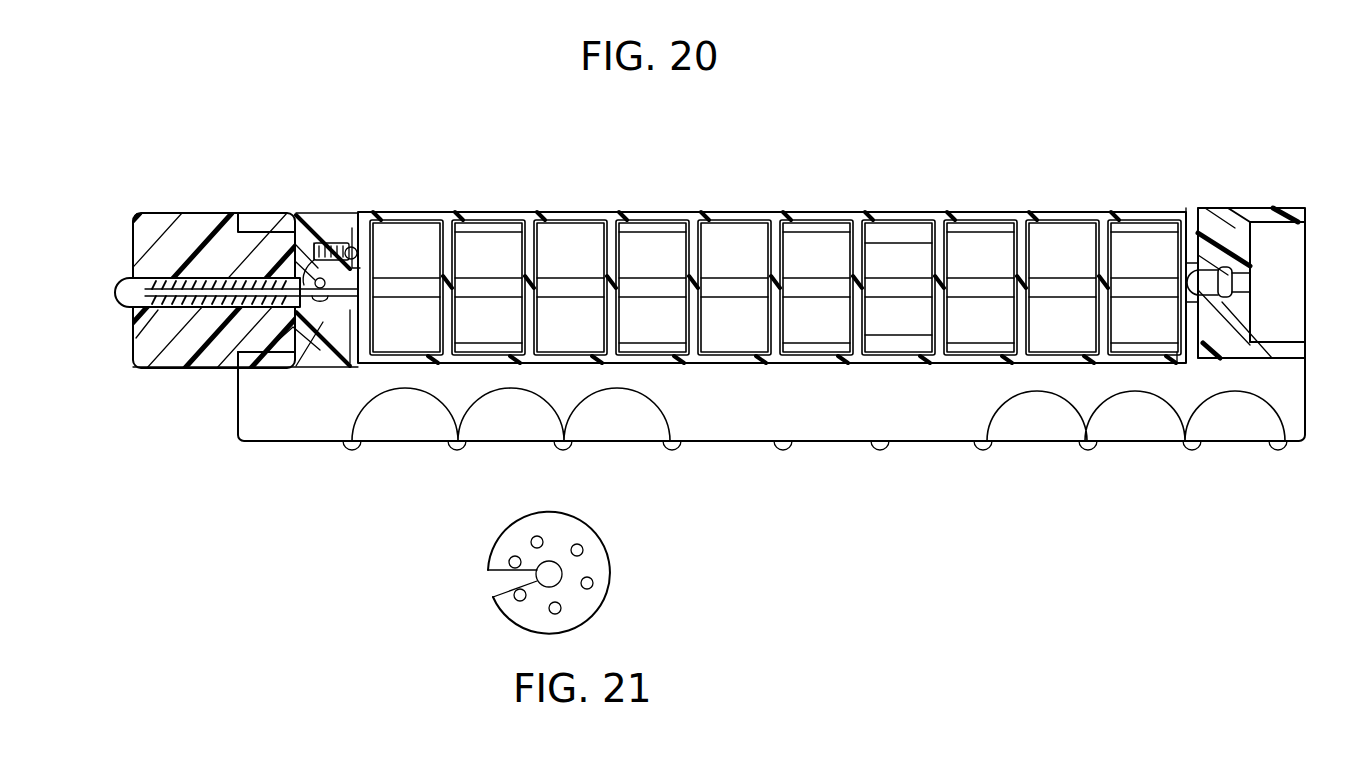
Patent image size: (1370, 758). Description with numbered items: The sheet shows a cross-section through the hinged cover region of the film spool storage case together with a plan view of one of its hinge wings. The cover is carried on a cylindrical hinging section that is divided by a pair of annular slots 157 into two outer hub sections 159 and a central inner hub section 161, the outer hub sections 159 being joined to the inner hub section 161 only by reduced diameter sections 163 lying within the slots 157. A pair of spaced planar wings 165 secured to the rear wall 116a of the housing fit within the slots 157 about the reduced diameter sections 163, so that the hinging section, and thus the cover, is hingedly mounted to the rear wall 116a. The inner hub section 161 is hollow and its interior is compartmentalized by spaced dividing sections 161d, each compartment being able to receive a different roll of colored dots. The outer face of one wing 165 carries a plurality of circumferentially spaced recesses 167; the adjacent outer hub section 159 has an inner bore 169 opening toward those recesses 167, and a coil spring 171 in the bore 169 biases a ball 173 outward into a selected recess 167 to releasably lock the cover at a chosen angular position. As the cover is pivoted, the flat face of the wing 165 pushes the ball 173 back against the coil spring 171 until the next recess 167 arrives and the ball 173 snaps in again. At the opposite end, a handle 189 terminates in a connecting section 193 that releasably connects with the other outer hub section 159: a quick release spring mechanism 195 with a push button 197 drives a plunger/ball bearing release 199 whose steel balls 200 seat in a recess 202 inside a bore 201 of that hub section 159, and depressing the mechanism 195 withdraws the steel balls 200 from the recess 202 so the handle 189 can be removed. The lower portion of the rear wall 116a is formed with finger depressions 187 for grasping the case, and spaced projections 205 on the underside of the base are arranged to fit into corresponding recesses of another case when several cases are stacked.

In FIG. 20, the rear wall 116a is at (848, 430).
In FIG. 20, the slots 157 is at (358, 218).
In FIG. 20, the outer hub sections 159 is at (241, 222).
In FIG. 20, the inner hub section 161 is at (775, 266).
In FIG. 20, the dividing sections 161d is at (865, 218).
In FIG. 20, the reduced diameter sections 163 is at (344, 368).
In FIG. 20, the wings 165 is at (1194, 226).
In FIG. 21, the wings 165 is at (578, 616).
In FIG. 20, the recesses 167 is at (355, 250).
In FIG. 21, the recesses 167 is at (530, 571).
In FIG. 20, the inner bore 169 is at (324, 242).
In FIG. 20, the coil spring 171 is at (316, 242).
In FIG. 20, the ball 173 is at (337, 242).
In FIG. 20, the finger depressions 187 is at (1128, 393).
In FIG. 20, the handle 189 is at (186, 200).
In FIG. 20, the connecting section 193 is at (154, 222).
In FIG. 20, the quick release spring mechanism 195 is at (148, 355).
In FIG. 20, the push button 197 is at (125, 291).
In FIG. 20, the plunger/ball bearing release 199 is at (300, 365).
In FIG. 20, the steel balls 200 is at (314, 242).
In FIG. 20, the bore 201 is at (300, 300).
In FIG. 20, the recess 202 is at (1250, 292).
In FIG. 20, the projections 205 is at (784, 450).